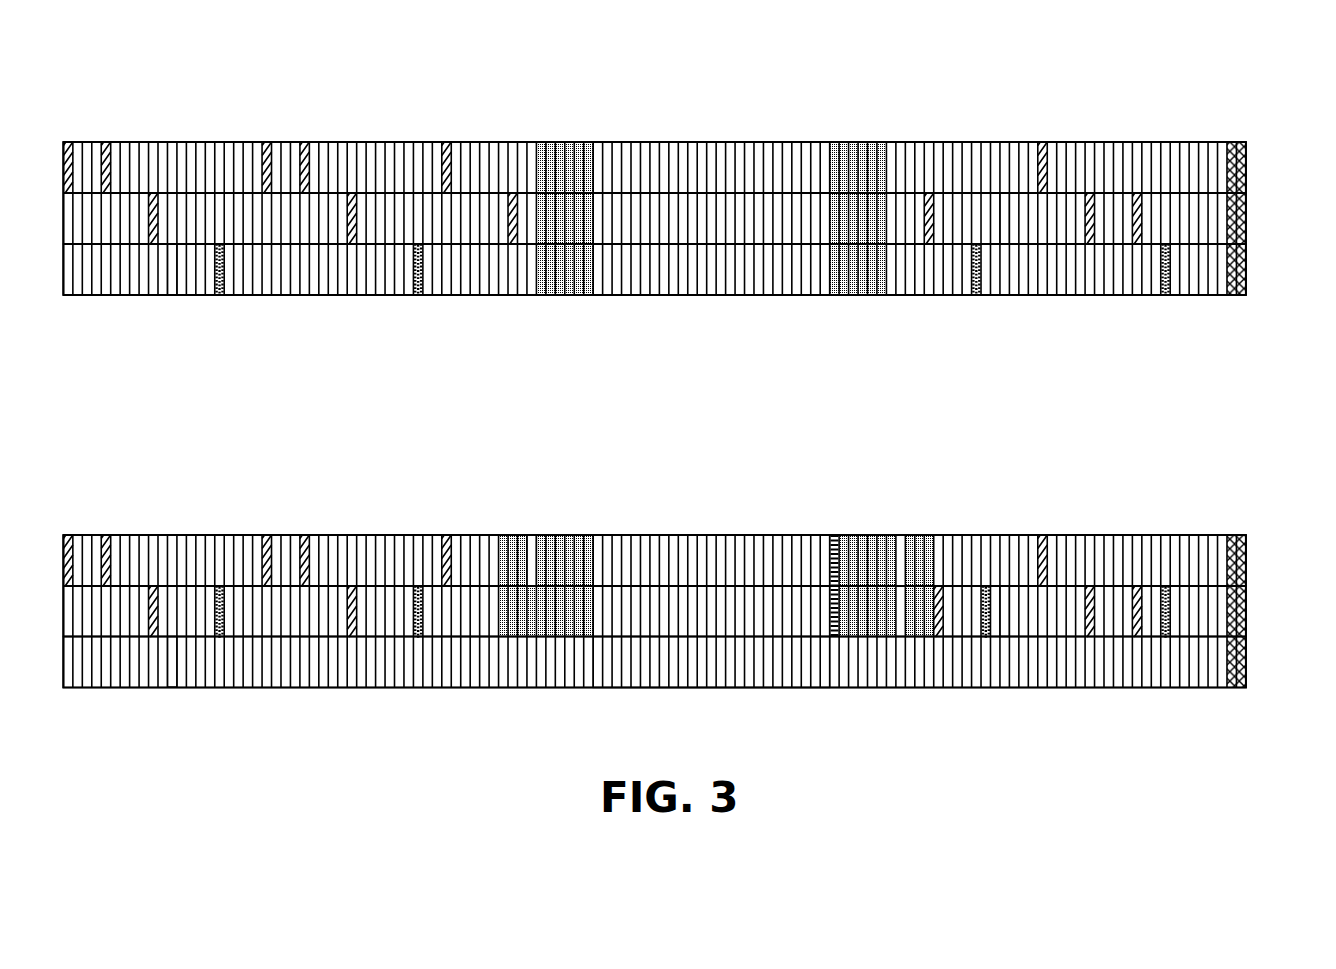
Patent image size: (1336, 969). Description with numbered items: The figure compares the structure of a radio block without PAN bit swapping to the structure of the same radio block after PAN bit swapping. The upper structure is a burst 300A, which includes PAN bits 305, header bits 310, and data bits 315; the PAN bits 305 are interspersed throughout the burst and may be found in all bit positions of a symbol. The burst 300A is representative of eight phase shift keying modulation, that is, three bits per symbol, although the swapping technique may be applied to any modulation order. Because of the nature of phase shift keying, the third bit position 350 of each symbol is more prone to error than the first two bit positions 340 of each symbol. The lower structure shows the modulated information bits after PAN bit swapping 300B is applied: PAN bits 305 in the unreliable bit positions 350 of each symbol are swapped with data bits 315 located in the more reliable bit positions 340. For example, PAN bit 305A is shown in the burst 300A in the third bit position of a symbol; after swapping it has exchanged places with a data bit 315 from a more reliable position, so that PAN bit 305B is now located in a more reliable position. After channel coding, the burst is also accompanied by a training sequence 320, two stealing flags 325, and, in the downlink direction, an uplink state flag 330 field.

The burst 300A is at (637, 166).
The modulated information bits after PAN bit swapping 300B is at (637, 564).
The PAN bits 305 is at (103, 142).
The PAN bit 305A is at (220, 295).
The PAN bit 305B is at (220, 637).
The header bits 310 is at (593, 139).
The data bits 315 is at (1003, 207).
The training sequence 320 is at (828, 139).
The stealing flags 325 is at (834, 535).
The uplink state flag 330 is at (1237, 142).
The first two bit positions 340 is at (1250, 142).
The third bit position 350 is at (1250, 244).